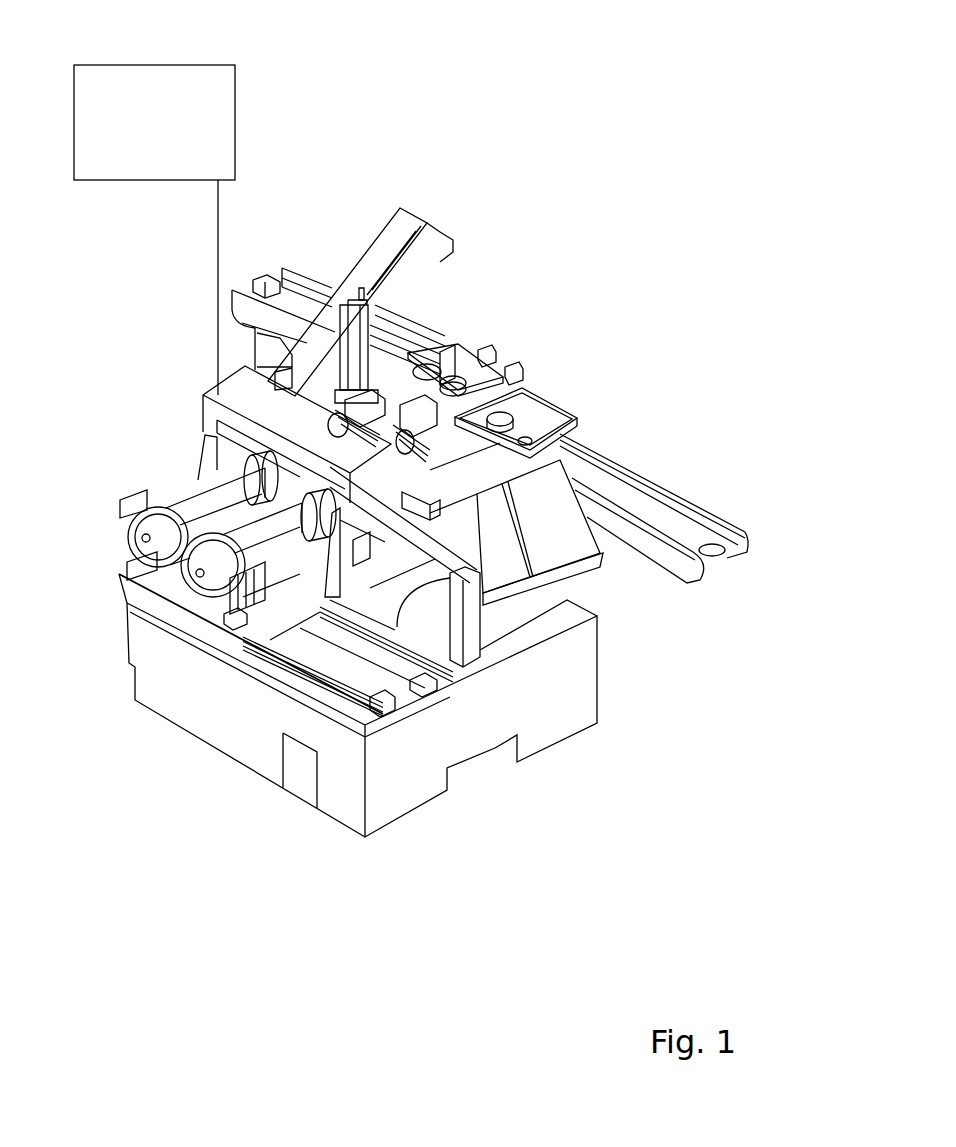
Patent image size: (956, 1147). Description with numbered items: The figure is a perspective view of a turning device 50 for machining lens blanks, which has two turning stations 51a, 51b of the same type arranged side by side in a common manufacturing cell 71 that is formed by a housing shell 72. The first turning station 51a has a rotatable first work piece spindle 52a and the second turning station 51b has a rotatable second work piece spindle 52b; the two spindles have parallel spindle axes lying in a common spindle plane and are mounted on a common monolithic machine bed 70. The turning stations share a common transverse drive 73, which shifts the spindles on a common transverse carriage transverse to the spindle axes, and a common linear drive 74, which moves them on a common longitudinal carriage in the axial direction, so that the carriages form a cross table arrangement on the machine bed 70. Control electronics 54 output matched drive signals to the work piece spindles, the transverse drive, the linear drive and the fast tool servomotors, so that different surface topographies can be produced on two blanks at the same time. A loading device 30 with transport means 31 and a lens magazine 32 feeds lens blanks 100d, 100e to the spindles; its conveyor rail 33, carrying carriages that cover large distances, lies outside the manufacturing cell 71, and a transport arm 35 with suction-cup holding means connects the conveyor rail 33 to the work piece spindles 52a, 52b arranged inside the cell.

The loading device 30 is at (329, 411).
The transport means 31 is at (564, 405).
The lens magazine 32 is at (552, 400).
The conveyor rail 33 is at (660, 481).
The transport arm 35 is at (413, 211).
The turning device 50 is at (352, 834).
The first turning station 51a is at (390, 560).
The second turning station 51b is at (425, 581).
The first work piece spindle 52a is at (237, 469).
The second work piece spindle 52b is at (300, 506).
The control electronics 54 is at (238, 84).
The machine bed 70 is at (539, 734).
The manufacturing cell 71 is at (588, 575).
The housing shell 72 is at (553, 531).
The transverse drive 73 is at (297, 656).
The linear drive 74 is at (231, 616).
The lens blank 100d is at (444, 360).
The lens blank 100e is at (467, 381).